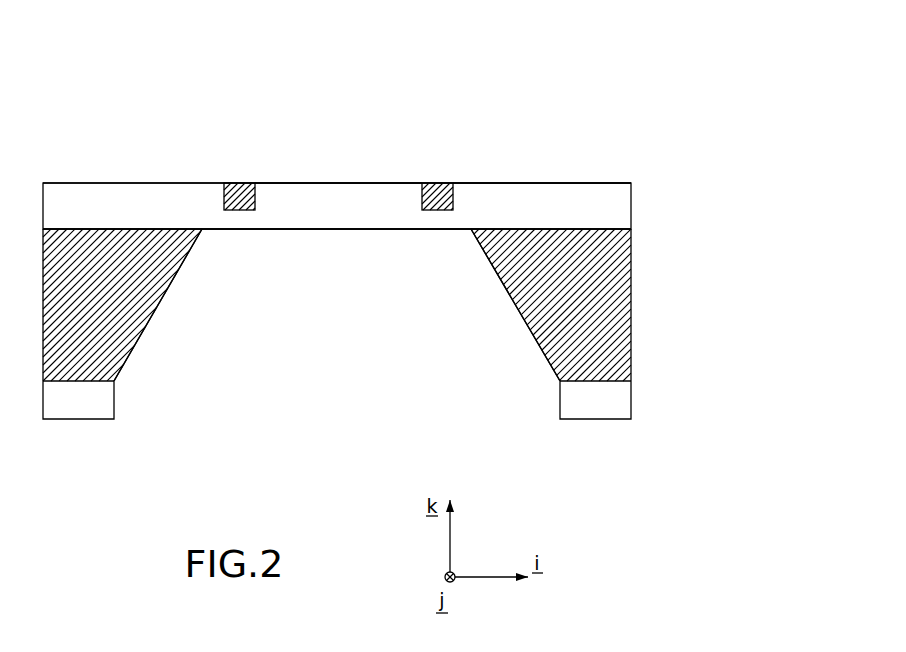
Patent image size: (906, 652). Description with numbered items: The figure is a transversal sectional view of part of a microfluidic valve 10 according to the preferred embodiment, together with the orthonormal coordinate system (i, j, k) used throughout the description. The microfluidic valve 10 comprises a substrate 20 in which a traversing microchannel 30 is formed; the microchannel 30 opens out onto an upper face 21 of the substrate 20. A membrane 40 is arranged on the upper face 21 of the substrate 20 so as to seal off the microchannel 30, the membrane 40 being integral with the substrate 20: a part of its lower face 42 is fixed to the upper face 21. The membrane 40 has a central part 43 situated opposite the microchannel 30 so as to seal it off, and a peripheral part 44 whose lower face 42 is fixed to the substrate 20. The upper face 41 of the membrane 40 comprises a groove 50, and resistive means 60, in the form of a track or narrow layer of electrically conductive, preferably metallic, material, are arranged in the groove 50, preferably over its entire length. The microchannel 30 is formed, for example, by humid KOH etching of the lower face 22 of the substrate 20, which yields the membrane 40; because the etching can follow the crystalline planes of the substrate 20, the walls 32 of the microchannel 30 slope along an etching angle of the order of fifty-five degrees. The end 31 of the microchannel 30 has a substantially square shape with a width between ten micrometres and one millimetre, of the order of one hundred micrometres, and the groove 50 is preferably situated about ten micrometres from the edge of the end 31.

The microfluidic valve 10 is at (108, 90).
The substrate 20 is at (647, 313).
The upper face of the substrate 21 is at (583, 229).
The lower face of the substrate 22 is at (617, 381).
The microchannel 30 is at (373, 363).
The end of the microchannel 31 is at (317, 245).
The walls of the microchannel 32 is at (510, 307).
The membrane 40 is at (647, 188).
The upper face of the membrane 41 is at (602, 182).
The lower face of the membrane 42 is at (618, 229).
The central part of the membrane 43 is at (328, 118).
The peripheral part of the membrane 44 is at (552, 118).
The groove 50 is at (222, 195).
The resistive means 60 is at (238, 173).